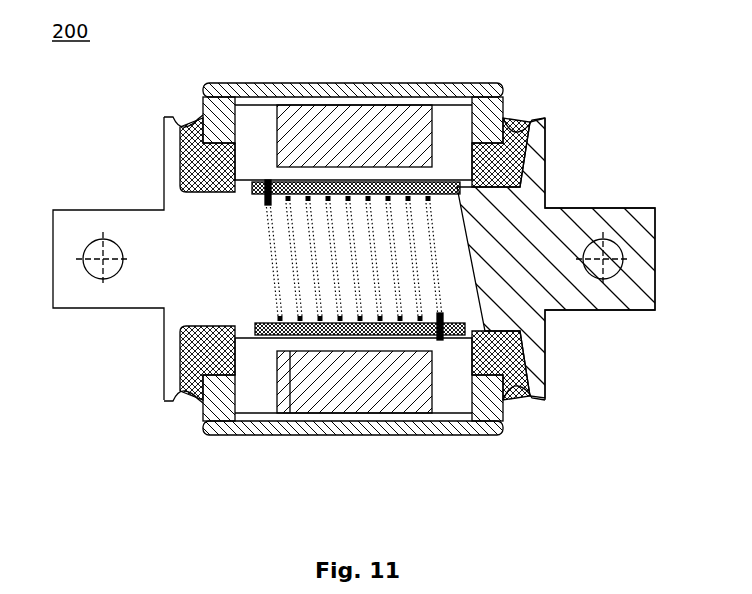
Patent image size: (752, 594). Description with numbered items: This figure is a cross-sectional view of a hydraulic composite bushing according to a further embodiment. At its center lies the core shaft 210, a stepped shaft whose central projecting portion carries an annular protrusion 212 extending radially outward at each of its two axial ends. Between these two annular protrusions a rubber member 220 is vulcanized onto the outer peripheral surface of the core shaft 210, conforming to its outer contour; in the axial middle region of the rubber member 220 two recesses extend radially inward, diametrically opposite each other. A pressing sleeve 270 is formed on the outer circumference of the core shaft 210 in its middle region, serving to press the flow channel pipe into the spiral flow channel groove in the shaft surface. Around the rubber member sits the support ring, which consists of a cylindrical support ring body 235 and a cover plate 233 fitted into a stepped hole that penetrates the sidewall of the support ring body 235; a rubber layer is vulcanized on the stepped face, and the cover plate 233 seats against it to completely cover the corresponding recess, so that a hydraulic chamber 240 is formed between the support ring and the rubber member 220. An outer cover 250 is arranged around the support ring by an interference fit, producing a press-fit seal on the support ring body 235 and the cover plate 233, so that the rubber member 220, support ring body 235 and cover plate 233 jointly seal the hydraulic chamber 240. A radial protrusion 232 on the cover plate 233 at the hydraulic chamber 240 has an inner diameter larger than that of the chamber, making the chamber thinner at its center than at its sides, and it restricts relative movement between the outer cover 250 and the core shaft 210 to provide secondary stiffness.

The core shaft 210 is at (539, 238).
The annular protrusion 212 is at (551, 134).
The rubber member 220 is at (334, 185).
The radial protrusion 232 is at (388, 396).
The cover plate 233 is at (300, 108).
The support ring body 235 is at (513, 423).
The hydraulic chamber 240 is at (463, 125).
The outer cover 250 is at (250, 88).
The pressing sleeve 270 is at (396, 190).